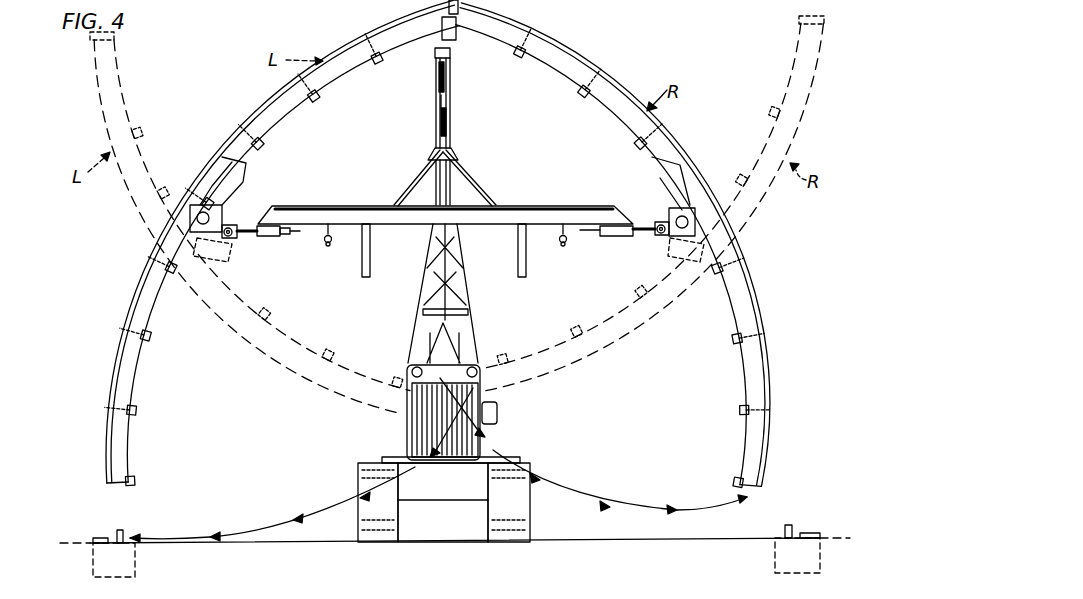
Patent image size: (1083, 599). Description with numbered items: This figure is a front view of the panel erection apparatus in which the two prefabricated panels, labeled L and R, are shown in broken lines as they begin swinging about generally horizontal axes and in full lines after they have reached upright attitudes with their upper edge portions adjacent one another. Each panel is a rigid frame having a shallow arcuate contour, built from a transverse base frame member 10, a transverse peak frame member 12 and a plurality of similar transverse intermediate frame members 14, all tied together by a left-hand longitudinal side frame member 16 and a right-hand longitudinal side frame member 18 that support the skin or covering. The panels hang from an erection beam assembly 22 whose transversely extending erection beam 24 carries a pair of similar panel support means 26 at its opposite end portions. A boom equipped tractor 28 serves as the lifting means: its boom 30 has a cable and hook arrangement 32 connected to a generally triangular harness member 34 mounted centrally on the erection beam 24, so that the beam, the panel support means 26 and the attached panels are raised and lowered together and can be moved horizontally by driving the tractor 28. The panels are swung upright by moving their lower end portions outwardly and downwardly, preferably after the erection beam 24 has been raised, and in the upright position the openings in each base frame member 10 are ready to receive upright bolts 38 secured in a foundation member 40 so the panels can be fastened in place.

The transverse base frame member 10 is at (133, 481).
The transverse peak frame member 12 is at (456, 33).
The transverse intermediate frame member 14 is at (376, 65).
The left-hand longitudinal side frame member 16 is at (282, 118).
The right-hand longitudinal side frame member 18 is at (610, 90).
The erection beam assembly 22 is at (445, 223).
The erection beam 24 is at (550, 206).
The panel support means 26 is at (233, 247).
The boom equipped tractor 28 is at (485, 358).
The boom 30 is at (457, 104).
The cable and hook arrangement 32 is at (438, 124).
The harness member 34 is at (473, 180).
The upright bolt 38 is at (123, 531).
The foundation member 40 is at (120, 563).